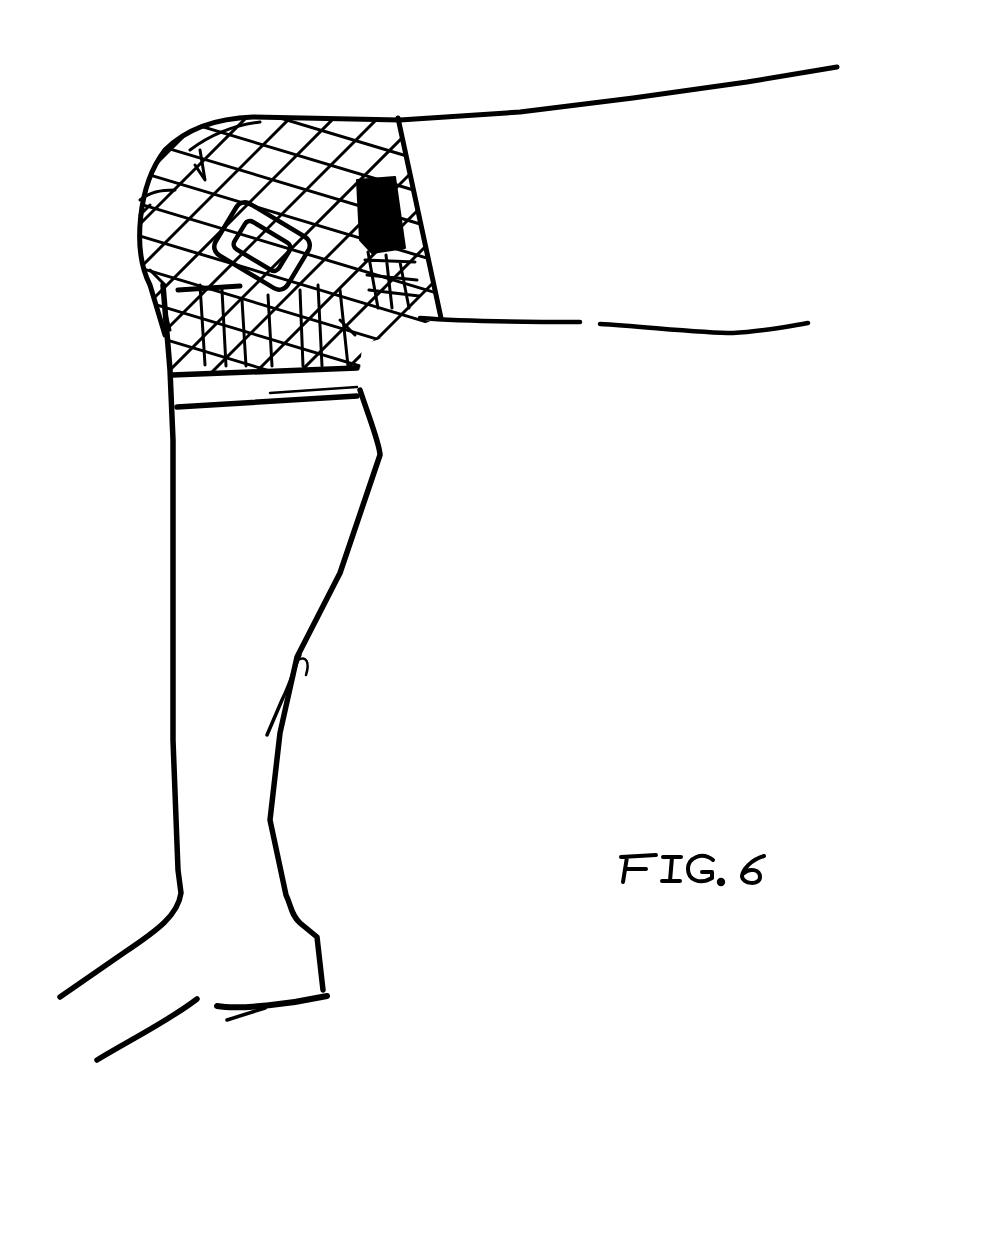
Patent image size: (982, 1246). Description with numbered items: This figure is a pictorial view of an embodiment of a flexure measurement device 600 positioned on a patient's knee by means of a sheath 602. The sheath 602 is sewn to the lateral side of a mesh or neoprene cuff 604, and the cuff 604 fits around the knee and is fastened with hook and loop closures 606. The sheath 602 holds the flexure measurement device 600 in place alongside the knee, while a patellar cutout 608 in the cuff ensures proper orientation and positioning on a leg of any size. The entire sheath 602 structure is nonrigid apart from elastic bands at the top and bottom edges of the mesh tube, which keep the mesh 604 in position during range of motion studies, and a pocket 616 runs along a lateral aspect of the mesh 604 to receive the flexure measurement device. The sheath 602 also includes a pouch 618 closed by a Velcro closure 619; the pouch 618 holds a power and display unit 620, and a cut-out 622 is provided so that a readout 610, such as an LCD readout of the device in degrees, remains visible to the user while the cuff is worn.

The flexure measurement device 600 is at (440, 120).
The sheath 602 is at (307, 260).
The mesh or neoprene cuff 604 is at (205, 178).
The hook and loop closures 606 is at (335, 175).
The patellar cutout 608 is at (165, 194).
The readout 610 is at (172, 410).
The pocket 616 is at (382, 178).
The pouch 618 is at (163, 277).
The Velcro closure 619 is at (167, 320).
The power and display unit 620 is at (165, 198).
The cut-out 622 is at (347, 325).